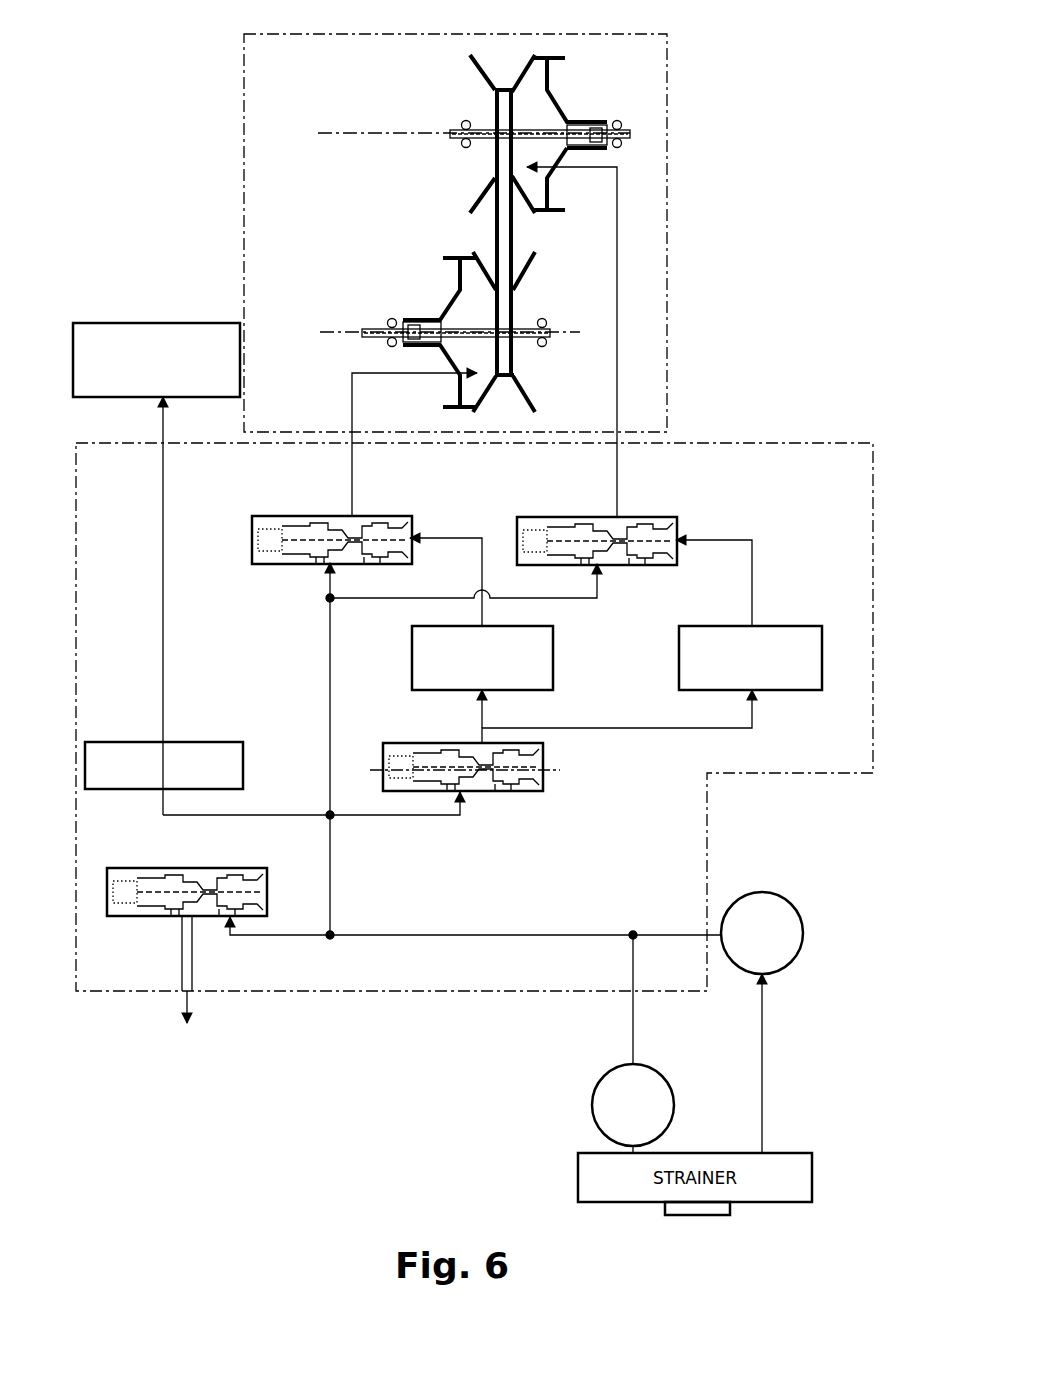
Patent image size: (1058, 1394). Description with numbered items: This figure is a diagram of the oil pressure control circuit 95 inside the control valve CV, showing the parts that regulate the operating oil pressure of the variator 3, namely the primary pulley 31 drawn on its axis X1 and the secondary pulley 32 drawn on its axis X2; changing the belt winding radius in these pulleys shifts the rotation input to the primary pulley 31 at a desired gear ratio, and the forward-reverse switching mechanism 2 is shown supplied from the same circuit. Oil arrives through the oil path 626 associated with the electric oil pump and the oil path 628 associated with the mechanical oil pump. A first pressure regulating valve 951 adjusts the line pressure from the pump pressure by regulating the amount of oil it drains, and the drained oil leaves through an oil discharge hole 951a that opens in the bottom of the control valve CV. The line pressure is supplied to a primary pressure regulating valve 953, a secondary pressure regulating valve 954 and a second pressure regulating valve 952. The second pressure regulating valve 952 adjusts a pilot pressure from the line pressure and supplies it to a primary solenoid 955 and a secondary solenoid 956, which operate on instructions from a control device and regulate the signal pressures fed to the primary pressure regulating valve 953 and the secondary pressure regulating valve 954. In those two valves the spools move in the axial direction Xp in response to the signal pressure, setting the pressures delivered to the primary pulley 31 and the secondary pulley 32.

The forward-reverse switching mechanism 2 is at (122, 322).
The variator 3 is at (348, 146).
The primary pulley 31 is at (431, 316).
The secondary pulley 32 is at (455, 134).
The oil pressure control circuit 95 is at (590, 830).
The first pressure regulating valve 951 is at (128, 867).
The oil discharge hole 951a is at (182, 968).
The second pressure regulating valve 952 is at (484, 745).
The primary pressure regulating valve 953 is at (266, 515).
The secondary pressure regulating valve 954 is at (536, 515).
The primary solenoid 955 is at (412, 641).
The secondary solenoid 956 is at (680, 641).
The oil path 626 is at (765, 1045).
The oil path 628 is at (625, 1045).
The control valve CV is at (829, 440).
The primary pulley axis X1 is at (431, 334).
The secondary pulley axis X2 is at (448, 152).
The Xp direction Xp is at (484, 771).